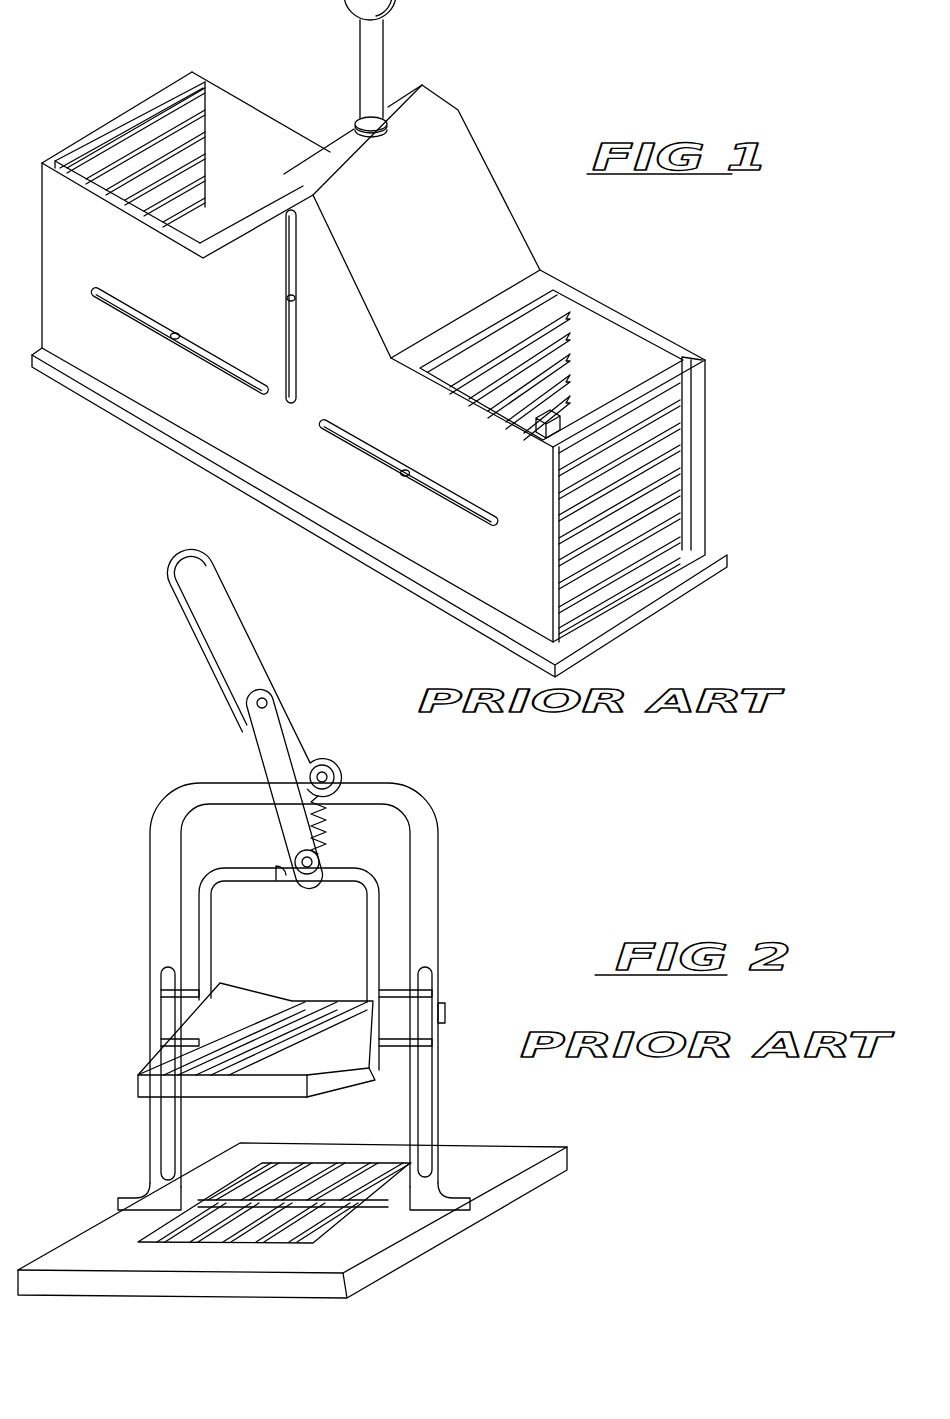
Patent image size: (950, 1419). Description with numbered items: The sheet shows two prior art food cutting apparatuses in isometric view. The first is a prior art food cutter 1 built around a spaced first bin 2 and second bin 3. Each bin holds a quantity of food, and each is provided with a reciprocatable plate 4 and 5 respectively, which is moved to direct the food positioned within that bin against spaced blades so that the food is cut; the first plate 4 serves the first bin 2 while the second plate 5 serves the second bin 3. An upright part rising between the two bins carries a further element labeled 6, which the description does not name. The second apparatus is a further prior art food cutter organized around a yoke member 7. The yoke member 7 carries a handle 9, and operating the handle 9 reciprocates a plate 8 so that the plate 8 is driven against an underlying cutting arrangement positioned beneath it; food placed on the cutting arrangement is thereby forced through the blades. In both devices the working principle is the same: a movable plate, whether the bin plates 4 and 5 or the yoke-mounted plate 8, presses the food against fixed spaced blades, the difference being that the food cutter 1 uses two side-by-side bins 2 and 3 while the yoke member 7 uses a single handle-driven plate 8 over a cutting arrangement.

In FIG. 1, the food cutter 1 is at (548, 70).
In FIG. 1, the first bin 2 is at (253, 137).
In FIG. 1, the second bin 3 is at (620, 350).
In FIG. 1, the reciprocatable plate 4 is at (243, 212).
In FIG. 1, the reciprocatable plate 5 is at (560, 303).
In FIG. 1, the handle 6 is at (378, 58).
In FIG. 2, the yoke member 7 is at (444, 912).
In FIG. 2, the plate 8 is at (312, 998).
In FIG. 2, the handle 9 is at (249, 652).